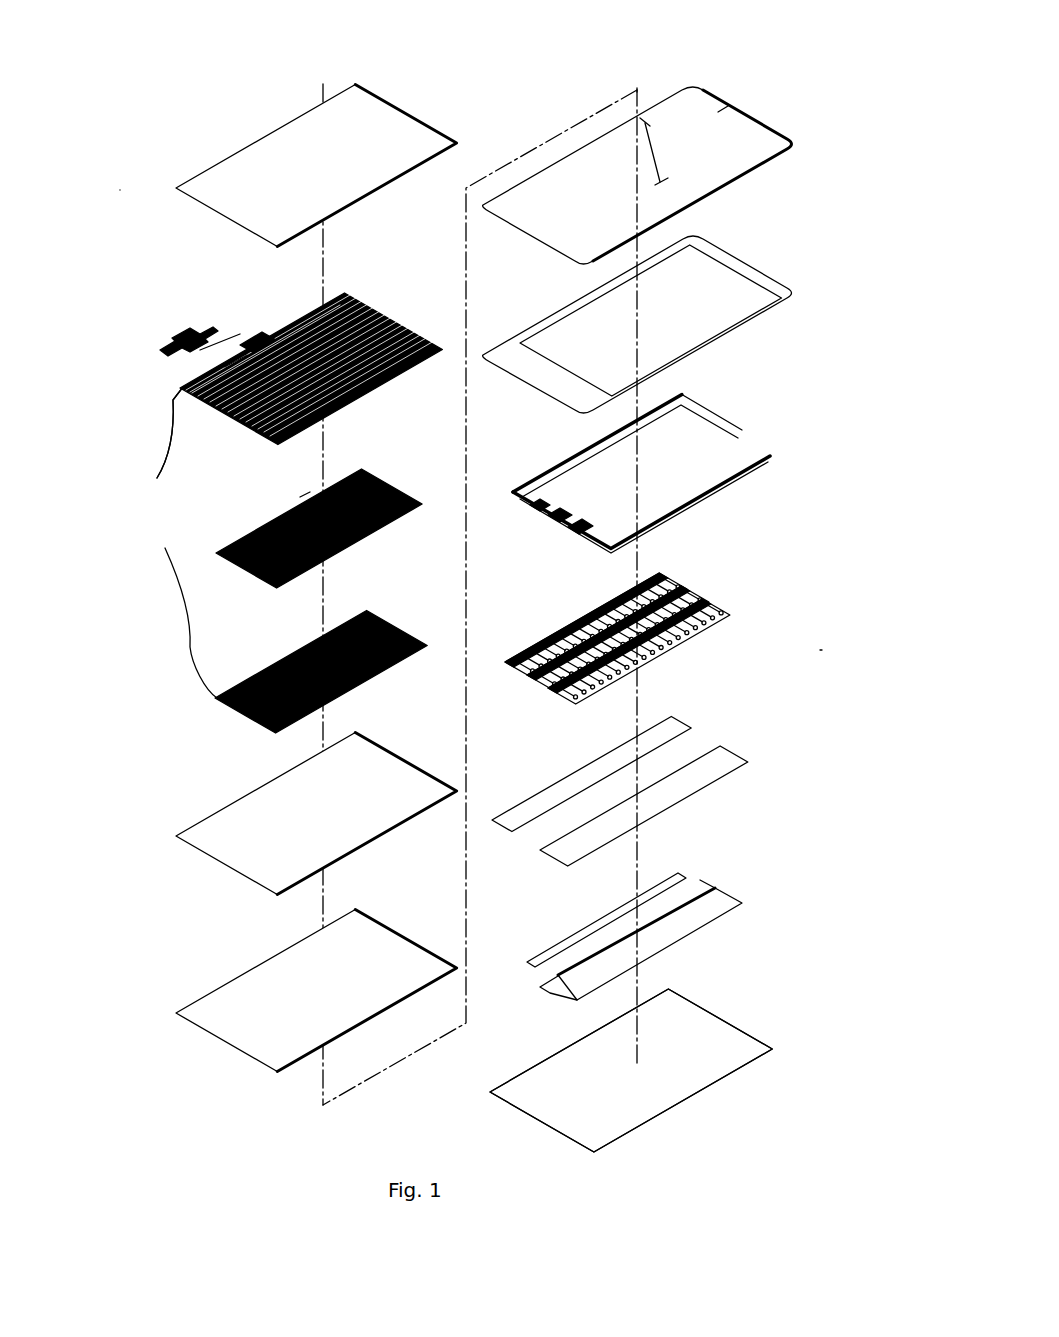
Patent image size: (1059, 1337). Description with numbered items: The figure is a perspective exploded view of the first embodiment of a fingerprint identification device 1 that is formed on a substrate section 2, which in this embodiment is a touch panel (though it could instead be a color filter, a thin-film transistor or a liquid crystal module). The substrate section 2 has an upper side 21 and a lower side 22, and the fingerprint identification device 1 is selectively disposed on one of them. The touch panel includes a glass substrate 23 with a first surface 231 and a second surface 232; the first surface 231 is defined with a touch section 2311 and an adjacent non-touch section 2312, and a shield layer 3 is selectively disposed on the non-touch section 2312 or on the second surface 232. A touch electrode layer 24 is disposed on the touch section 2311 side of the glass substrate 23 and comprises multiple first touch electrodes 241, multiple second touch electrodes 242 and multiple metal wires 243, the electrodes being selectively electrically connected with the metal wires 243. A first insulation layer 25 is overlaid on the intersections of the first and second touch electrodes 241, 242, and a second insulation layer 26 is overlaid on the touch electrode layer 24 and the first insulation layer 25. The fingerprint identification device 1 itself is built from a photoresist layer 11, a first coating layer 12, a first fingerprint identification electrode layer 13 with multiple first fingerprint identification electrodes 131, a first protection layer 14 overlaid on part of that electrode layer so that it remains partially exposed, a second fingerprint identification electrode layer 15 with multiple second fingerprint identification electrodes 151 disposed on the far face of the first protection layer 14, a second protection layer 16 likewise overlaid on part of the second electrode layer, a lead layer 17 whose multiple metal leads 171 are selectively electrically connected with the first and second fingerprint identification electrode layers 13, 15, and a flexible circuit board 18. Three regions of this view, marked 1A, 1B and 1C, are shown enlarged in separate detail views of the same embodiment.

The fingerprint identification device 1 is at (100, 235).
The photoresist layer 11 is at (252, 1010).
The first coating layer 12 is at (265, 847).
The first fingerprint identification electrode layer 13 is at (245, 732).
The first fingerprint identification electrodes 131 is at (230, 703).
The first protection layer 14 is at (372, 470).
The second fingerprint identification electrode layer 15 is at (403, 263).
The second fingerprint identification electrodes 151 is at (368, 303).
The second protection layer 16 is at (258, 175).
The lead layer 17 is at (152, 473).
The metal leads 171 is at (183, 542).
The flexible circuit board 18 is at (157, 352).
The connection portion 1A is at (225, 367).
The contact point 1B is at (227, 693).
The insulating region 1C is at (305, 498).
The substrate section 2 is at (428, 83).
The upper side 21 is at (585, 98).
The lower side 22 is at (680, 1117).
The glass substrate 23 is at (757, 47).
The first surface 231 is at (722, 110).
The touch section 2311 is at (660, 182).
The non-touch section 2312 is at (645, 123).
The second surface 232 is at (790, 148).
The touch electrode layer 24 is at (825, 568).
The first touch electrodes 241 is at (723, 603).
The second touch electrodes 242 is at (682, 875).
The metal wires 243 is at (688, 508).
The first insulation layer 25 is at (577, 790).
The second insulation layer 26 is at (580, 1060).
The shield layer 3 is at (723, 338).